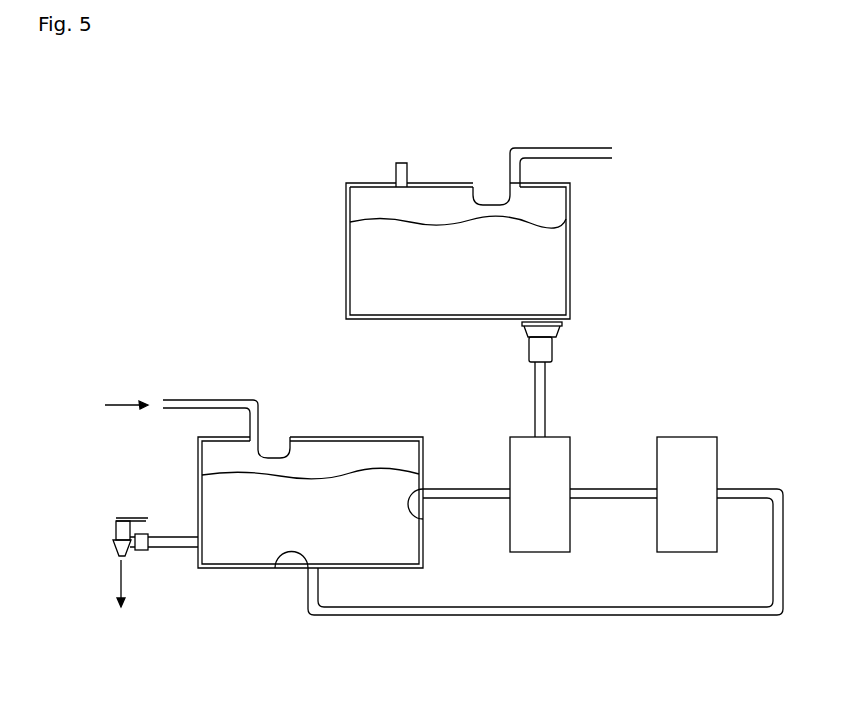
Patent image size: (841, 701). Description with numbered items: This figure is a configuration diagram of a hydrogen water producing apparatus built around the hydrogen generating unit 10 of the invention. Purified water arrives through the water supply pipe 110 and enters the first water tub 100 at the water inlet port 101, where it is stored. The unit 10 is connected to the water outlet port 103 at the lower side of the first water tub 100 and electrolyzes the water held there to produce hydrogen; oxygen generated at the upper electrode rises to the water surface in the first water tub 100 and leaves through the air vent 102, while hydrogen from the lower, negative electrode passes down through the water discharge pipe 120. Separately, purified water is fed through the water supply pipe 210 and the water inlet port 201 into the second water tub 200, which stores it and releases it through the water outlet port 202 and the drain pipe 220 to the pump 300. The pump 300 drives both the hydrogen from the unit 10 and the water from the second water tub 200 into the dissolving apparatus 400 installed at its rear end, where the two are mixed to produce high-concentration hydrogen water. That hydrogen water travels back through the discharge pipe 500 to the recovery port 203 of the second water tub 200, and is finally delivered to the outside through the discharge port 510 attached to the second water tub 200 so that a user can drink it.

The water treatment apparatus 10 is at (559, 333).
The first water tub 100 is at (571, 244).
The water inlet port 101 is at (476, 193).
The air vent 102 is at (397, 163).
The water outlet port 103 is at (545, 320).
The water supply pipe 110 is at (571, 150).
The water discharge pipe 120 is at (537, 390).
The second water tub 200 is at (198, 504).
The water inlet port 201 is at (290, 440).
The water outlet port 202 is at (420, 516).
The recovery port 203 is at (276, 575).
The water supply pipe 210 is at (188, 400).
The drain pipe 220 is at (462, 488).
The pump 300 is at (540, 494).
The dissolving apparatus 400 is at (687, 494).
The discharge pipe 500 is at (745, 488).
The discharge port 510 is at (113, 532).